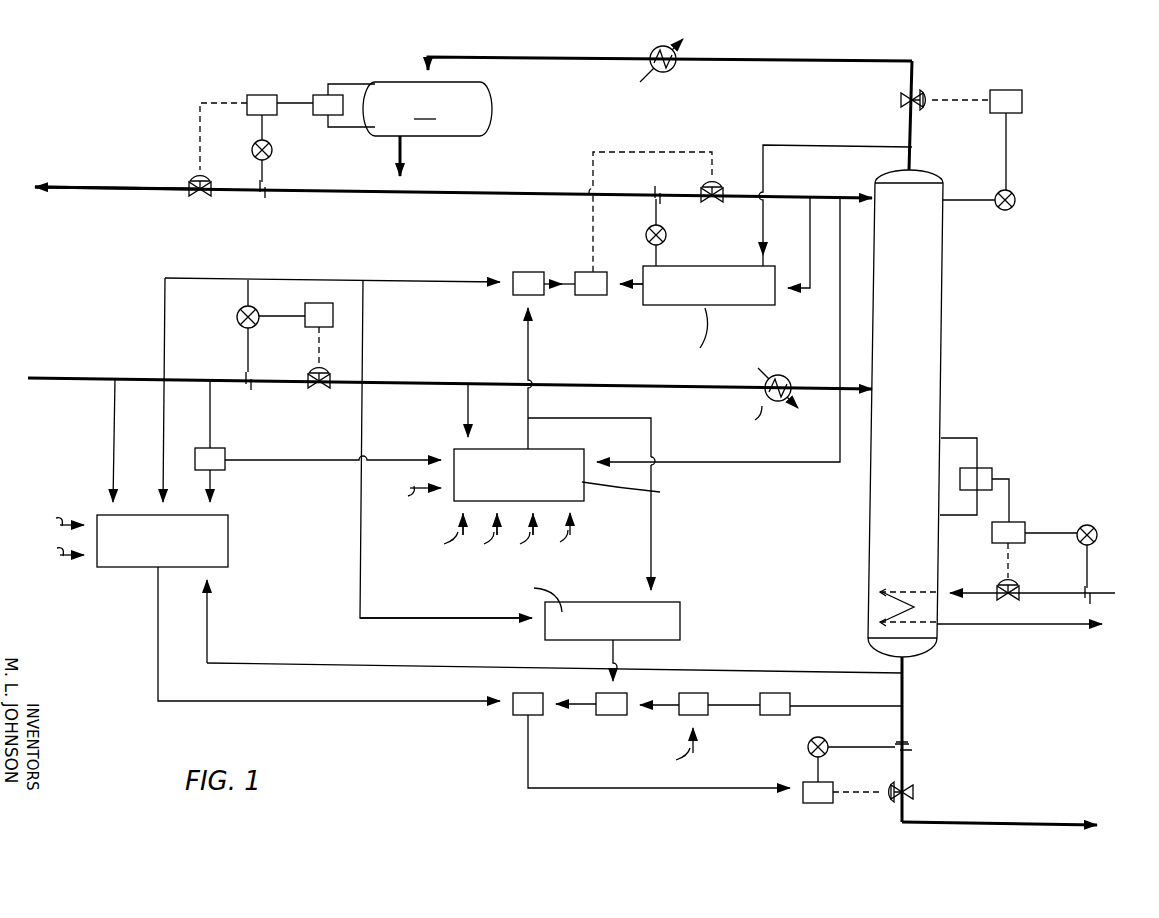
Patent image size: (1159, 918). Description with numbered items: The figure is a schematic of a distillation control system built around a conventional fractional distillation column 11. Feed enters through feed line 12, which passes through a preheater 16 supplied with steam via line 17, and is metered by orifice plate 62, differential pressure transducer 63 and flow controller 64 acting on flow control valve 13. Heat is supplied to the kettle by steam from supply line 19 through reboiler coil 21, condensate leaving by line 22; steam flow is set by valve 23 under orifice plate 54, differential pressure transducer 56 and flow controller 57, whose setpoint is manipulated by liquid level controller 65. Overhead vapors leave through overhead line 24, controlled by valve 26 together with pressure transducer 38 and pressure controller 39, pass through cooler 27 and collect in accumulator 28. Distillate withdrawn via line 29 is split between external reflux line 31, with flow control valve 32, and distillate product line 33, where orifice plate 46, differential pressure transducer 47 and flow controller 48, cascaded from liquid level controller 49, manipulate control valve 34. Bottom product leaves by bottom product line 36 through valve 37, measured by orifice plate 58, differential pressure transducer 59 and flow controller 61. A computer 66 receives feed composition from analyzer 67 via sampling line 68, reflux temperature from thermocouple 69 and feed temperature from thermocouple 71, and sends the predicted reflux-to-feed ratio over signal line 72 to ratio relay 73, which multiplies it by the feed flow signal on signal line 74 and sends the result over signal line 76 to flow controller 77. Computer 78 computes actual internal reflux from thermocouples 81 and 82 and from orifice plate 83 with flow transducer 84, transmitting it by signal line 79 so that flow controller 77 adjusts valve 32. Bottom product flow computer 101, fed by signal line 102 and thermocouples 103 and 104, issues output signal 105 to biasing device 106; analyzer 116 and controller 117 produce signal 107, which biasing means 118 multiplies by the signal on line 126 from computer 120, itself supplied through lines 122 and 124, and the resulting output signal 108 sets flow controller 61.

The fractional distillation column 11 is at (920, 226).
The feed line 12 is at (70, 376).
The flow control valve 13 is at (317, 366).
The preheater 16 is at (772, 406).
The line 17 is at (778, 373).
The supply line 19 is at (1102, 592).
The reboiler coil 21 is at (888, 590).
The line 22 is at (1060, 630).
The valve 23 is at (1000, 580).
The overhead line 24 is at (762, 55).
The valve 26 is at (930, 92).
The cooler 27 is at (650, 48).
The accumulator 28 is at (427, 109).
The line 29 is at (406, 152).
The external reflux line 31 is at (472, 190).
The flow control valve 32 is at (712, 178).
The distillate product line 33 is at (83, 186).
The control valve 34 is at (196, 168).
The bottom product line 36 is at (982, 820).
The valve 37 is at (884, 800).
The pressure transducer 38 is at (1016, 193).
The pressure controller 39 is at (1015, 95).
The orifice plate 46 is at (266, 200).
The differential pressure transducer 47 is at (273, 152).
The flow controller 48 is at (252, 94).
The liquid level controller 49 is at (320, 94).
The orifice plate 54 is at (1078, 590).
The differential pressure transducer 56 is at (1088, 524).
The flow controller 57 is at (1022, 520).
The orifice plate 58 is at (912, 748).
The differential pressure transducer 59 is at (826, 740).
The flow controller 61 is at (808, 805).
The orifice plate 62 is at (250, 394).
The differential pressure transducer 63 is at (238, 325).
The flow controller 64 is at (300, 306).
The liquid level controller 65 is at (985, 466).
The computer 66 is at (588, 498).
The analyzer 67 is at (194, 454).
The sampling line 68 is at (216, 436).
The thermocouple 69 is at (838, 195).
The thermocouple 71 is at (465, 414).
The signal line 72 is at (526, 328).
The ratio relay 73 is at (514, 270).
The signal line 74 is at (428, 278).
The signal line 76 is at (560, 280).
The flow controller 77 is at (586, 298).
The computer 78 is at (745, 306).
The signal line 79 is at (628, 290).
The thermocouple 81 is at (905, 140).
The thermocouple 82 is at (808, 208).
The orifice plate 83 is at (652, 186).
The flow transducer 84 is at (668, 236).
The bottom product flow computer 101 is at (230, 542).
The signal line 102 is at (216, 494).
The thermocouple 103 is at (900, 667).
The thermocouple 104 is at (110, 440).
The output signal 105 is at (382, 705).
The biasing device 106 is at (520, 718).
The output signal 107 is at (582, 702).
The output signal 108 is at (604, 790).
The analyzer 116 is at (788, 720).
The controller 117 is at (702, 700).
The biasing means 118 is at (612, 718).
The computer 120 is at (684, 616).
The line 122 is at (654, 550).
The signal line 124 is at (492, 624).
The signal line 126 is at (616, 656).